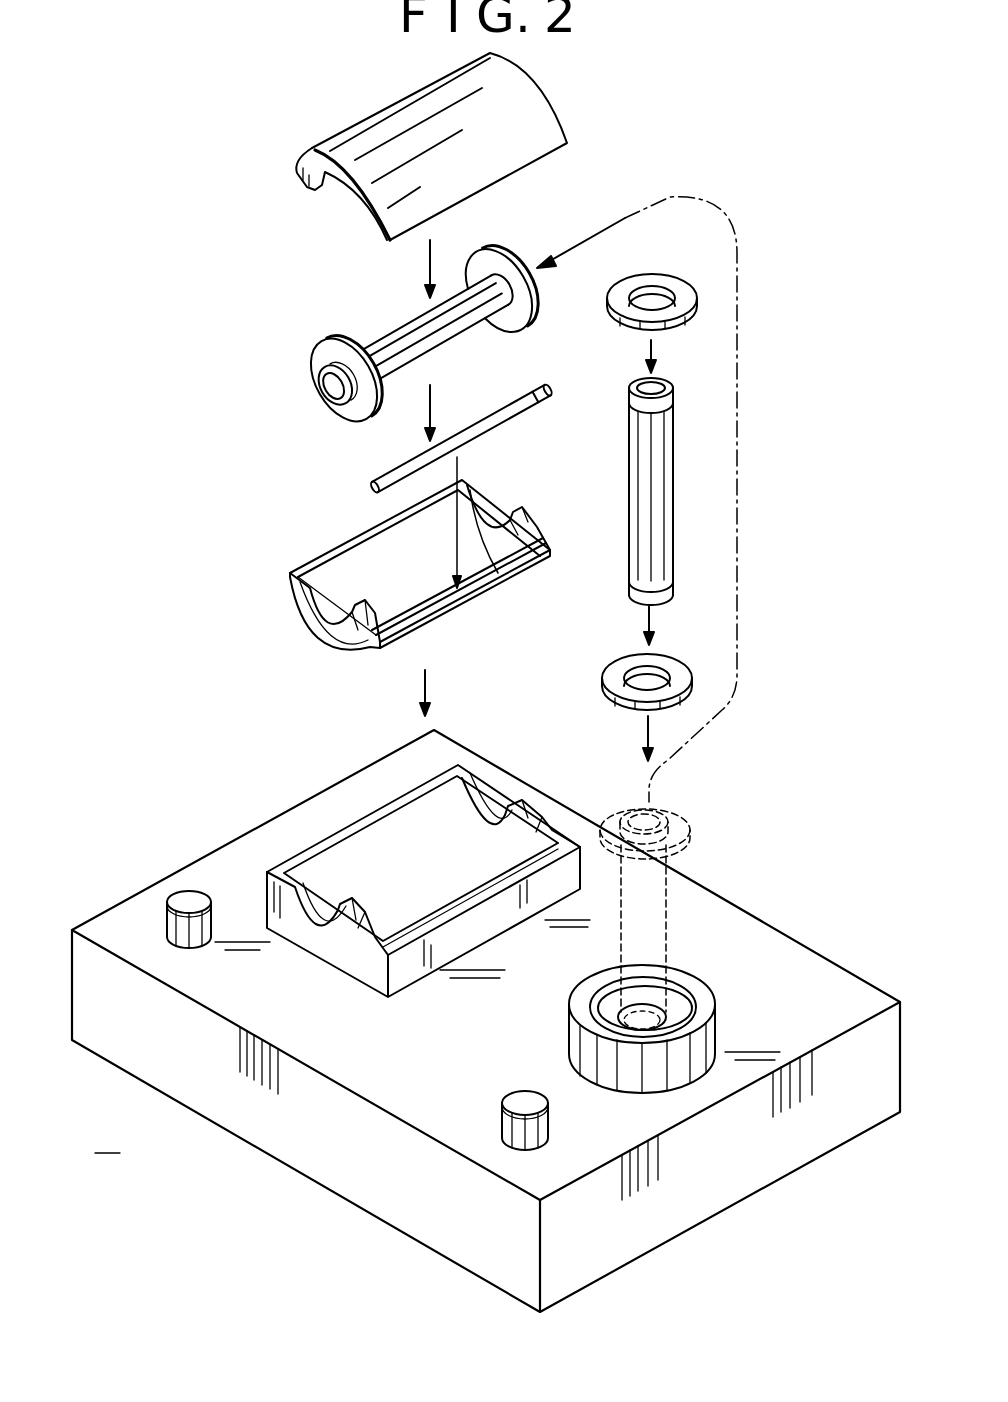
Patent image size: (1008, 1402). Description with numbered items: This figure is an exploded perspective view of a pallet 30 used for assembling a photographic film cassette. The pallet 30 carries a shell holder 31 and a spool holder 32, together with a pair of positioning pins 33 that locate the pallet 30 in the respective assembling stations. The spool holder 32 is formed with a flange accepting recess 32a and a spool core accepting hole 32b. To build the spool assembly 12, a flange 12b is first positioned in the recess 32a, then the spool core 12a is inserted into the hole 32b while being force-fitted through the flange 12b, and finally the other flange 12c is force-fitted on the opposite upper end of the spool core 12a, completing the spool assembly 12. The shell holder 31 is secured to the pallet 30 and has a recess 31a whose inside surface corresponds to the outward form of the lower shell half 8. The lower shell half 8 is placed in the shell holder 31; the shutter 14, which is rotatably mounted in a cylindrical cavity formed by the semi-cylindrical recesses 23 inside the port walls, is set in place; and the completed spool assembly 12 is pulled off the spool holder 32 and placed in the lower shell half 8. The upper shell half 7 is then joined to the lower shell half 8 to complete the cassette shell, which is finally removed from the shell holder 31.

The upper shell half 7 is at (535, 105).
The spool assembly 12 is at (518, 266).
The spool core 12a is at (656, 532).
The flange 12b is at (668, 672).
The other flange 12c is at (638, 284).
The shutter 14 is at (532, 385).
The lower shell half 8 is at (420, 549).
The semi-cylindrical recess 23 is at (483, 572).
The pallet 30 is at (722, 1225).
The shell holder 31 is at (423, 878).
The recess 31a is at (370, 840).
The spool holder 32 is at (643, 951).
The flange accepting recess 32a is at (582, 1018).
The spool core accepting hole 32b is at (680, 1010).
The positioning pins 33 is at (188, 897).